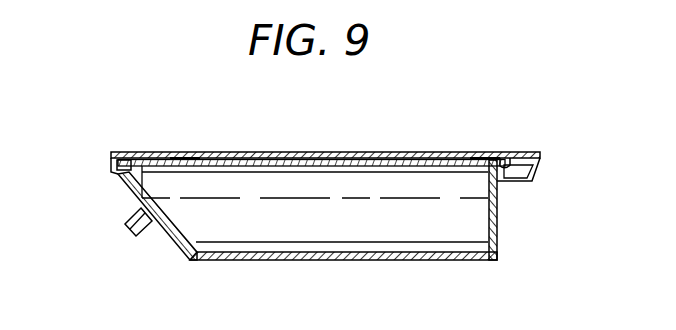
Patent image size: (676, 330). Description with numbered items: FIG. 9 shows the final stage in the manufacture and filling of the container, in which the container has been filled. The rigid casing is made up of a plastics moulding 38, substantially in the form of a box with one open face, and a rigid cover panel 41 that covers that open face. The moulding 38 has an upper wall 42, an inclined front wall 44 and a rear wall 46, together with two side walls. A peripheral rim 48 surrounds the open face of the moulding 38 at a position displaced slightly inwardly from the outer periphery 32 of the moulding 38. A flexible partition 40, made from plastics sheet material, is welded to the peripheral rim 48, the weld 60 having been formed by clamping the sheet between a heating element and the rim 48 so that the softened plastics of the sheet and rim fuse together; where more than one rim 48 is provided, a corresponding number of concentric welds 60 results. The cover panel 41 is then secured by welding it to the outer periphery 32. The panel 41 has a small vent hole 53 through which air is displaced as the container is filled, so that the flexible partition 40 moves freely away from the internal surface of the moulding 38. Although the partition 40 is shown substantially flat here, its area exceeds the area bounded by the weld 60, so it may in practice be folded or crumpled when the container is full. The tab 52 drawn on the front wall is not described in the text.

The outer periphery 32 is at (110, 166).
The plastics moulding 38 is at (392, 261).
The flexible partition 40 is at (374, 158).
The cover panel 41 is at (316, 159).
The upper wall 42 is at (270, 260).
The inclined front wall 44 is at (176, 242).
The rear wall 46 is at (499, 234).
The peripheral rim 48 is at (181, 159).
The mounting tab 52 is at (125, 225).
The vent hole 53 is at (263, 160).
The weld 60 is at (138, 162).